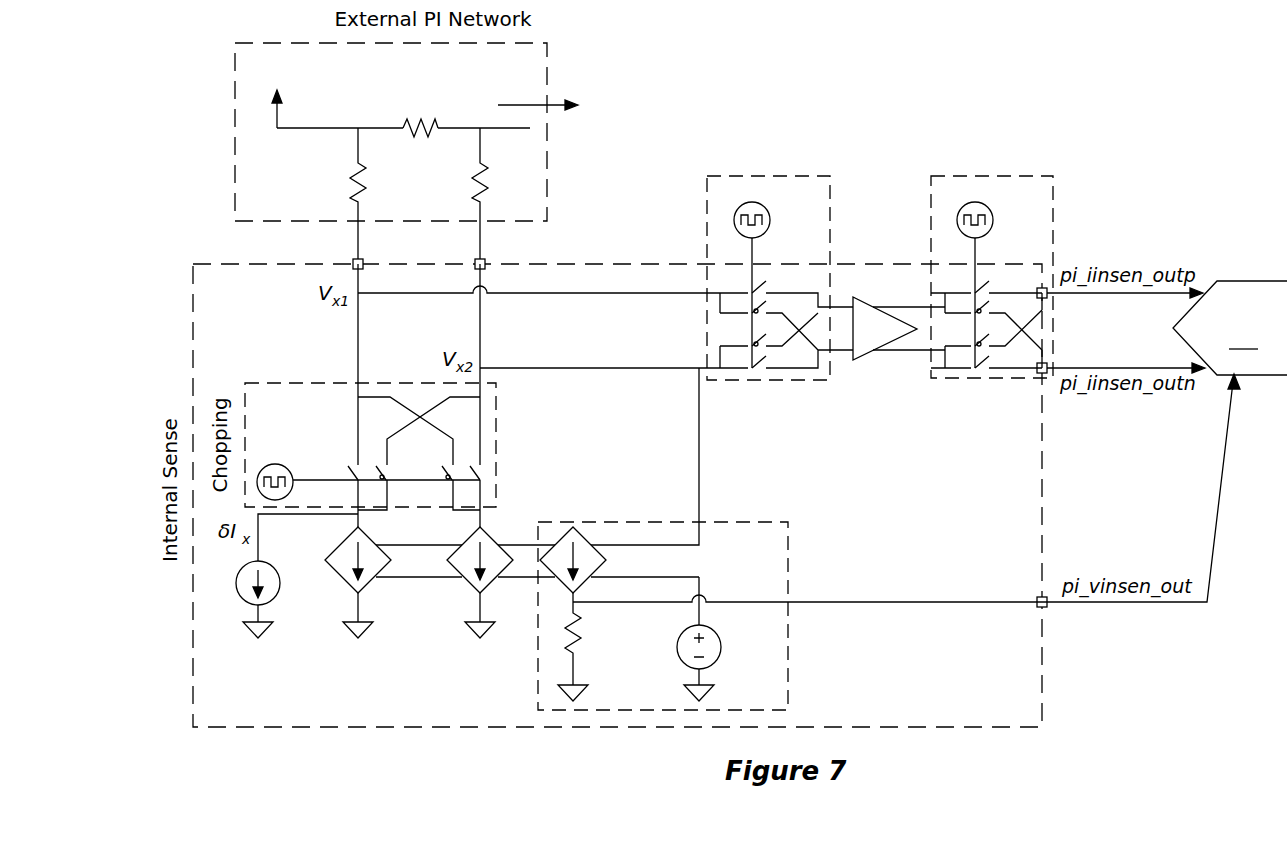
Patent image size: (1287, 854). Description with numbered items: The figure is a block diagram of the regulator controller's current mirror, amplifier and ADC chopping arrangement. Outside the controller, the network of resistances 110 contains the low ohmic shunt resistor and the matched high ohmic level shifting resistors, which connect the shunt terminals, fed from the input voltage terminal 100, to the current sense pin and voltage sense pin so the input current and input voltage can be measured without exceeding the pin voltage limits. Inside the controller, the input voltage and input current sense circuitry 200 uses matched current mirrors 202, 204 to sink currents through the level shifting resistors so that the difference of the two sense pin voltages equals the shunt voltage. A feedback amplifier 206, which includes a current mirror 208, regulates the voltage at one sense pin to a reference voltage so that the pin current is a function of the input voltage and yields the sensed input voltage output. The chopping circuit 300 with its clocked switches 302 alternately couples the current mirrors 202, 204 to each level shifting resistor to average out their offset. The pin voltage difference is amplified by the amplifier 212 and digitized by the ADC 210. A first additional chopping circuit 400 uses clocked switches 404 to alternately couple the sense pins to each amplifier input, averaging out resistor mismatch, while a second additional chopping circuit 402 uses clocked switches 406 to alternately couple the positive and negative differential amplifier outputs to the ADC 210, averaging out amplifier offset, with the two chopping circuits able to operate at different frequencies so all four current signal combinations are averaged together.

The input voltage terminal 100 is at (260, 126).
The network of resistances 110 is at (548, 70).
The input voltage and input current sense circuitry 200 is at (600, 262).
The current mirror 202 is at (338, 604).
The current mirror 204 is at (460, 604).
The feedback amplifier 206 is at (538, 688).
The current mirror 208 is at (560, 514).
The analog-to-digital converter 210 is at (1167, 328).
The amplifier 212 is at (878, 380).
The chopping circuit 300 is at (276, 382).
The chopping switches 302 is at (350, 458).
The first additional chopping circuit 400 is at (745, 176).
The second additional chopping circuit 402 is at (968, 176).
The clocked switches 404 is at (769, 266).
The clocked switches 406 is at (992, 266).